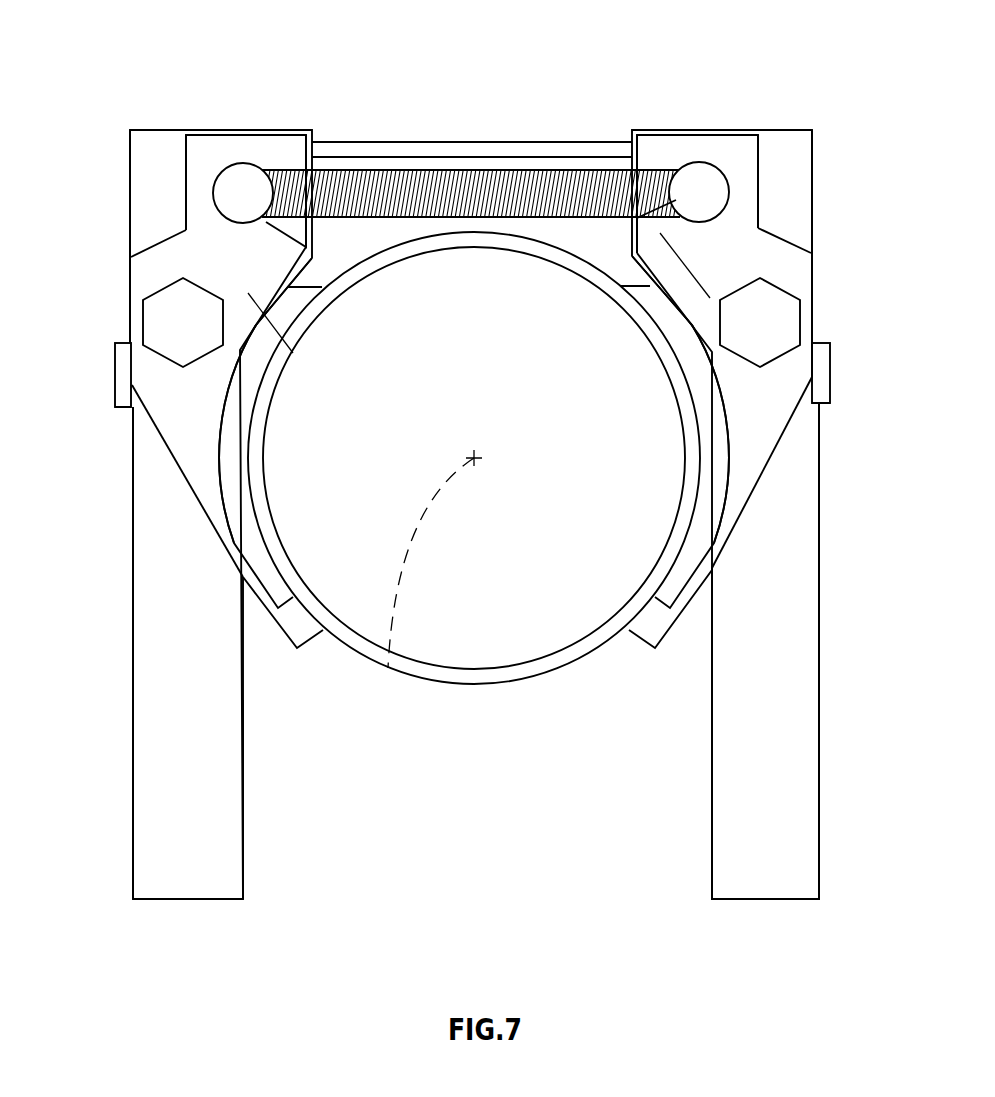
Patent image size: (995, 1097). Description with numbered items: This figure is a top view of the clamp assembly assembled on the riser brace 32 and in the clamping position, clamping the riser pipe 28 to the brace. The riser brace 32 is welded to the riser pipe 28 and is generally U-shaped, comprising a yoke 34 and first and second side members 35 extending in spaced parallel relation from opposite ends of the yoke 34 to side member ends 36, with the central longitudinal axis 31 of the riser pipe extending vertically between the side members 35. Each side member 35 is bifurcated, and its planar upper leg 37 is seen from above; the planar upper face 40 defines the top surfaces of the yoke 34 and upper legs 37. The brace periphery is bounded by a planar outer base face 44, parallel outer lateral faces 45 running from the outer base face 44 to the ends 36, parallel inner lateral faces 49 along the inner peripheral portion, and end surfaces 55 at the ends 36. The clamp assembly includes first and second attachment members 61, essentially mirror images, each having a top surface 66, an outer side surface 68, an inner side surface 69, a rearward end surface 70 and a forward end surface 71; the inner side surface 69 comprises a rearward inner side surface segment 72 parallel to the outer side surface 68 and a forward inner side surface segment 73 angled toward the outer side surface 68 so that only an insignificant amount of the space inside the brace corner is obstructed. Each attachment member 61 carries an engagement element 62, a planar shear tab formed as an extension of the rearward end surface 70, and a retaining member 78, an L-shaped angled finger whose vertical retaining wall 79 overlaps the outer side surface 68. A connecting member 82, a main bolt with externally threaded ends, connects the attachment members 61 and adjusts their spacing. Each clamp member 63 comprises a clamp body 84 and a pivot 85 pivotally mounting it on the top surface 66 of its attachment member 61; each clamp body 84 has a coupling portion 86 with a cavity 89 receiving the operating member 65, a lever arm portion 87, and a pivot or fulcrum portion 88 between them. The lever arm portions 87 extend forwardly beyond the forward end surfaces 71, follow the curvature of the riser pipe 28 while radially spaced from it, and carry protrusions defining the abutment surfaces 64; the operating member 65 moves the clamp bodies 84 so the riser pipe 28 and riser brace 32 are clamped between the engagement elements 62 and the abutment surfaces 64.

The riser pipe 28 is at (500, 686).
The central longitudinal axis 31 is at (424, 590).
The riser brace 32 is at (825, 725).
The yoke 34 is at (578, 128).
The side members 35 is at (130, 777).
The side member ends 36 is at (168, 903).
The upper leg 37 is at (155, 853).
The upper face 40 is at (778, 632).
The outer base face 44 is at (454, 141).
The outer lateral faces 45 is at (130, 718).
The inner lateral faces 49 is at (243, 736).
The end surface 55 is at (219, 900).
The attachment members 61 is at (148, 118).
The engagement element 62 is at (222, 126).
The clamp members 63 is at (153, 447).
The abutment surface 64 is at (313, 636).
The operating member 65 is at (522, 172).
The top surface 66 is at (147, 185).
The outer side surface 68 is at (129, 213).
The inner side surface 69 is at (312, 236).
The rearward end surface 70 is at (184, 131).
The forward end surface 71 is at (140, 410).
The rearward inner side surface segment 72 is at (303, 147).
The forward inner side surface segment 73 is at (318, 297).
The retaining member 78 is at (110, 350).
The vertical retaining wall 79 is at (119, 380).
The connecting member 82 is at (393, 152).
The clamp body 84 is at (152, 272).
The pivot 85 is at (197, 333).
The coupling portion 86 is at (186, 158).
The lever arm portion 87 is at (212, 527).
The pivot portion 88 is at (293, 353).
The cavity 89 is at (272, 168).